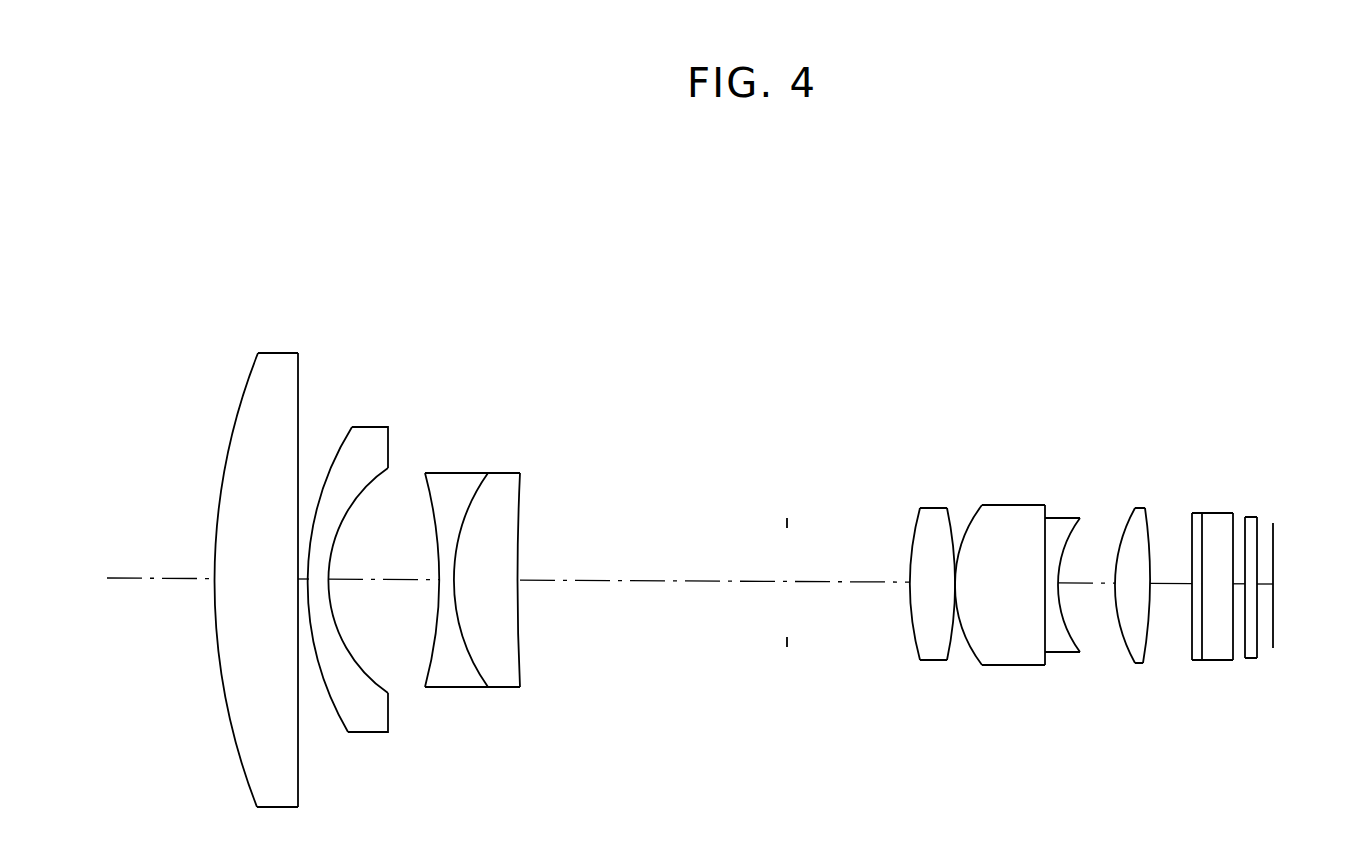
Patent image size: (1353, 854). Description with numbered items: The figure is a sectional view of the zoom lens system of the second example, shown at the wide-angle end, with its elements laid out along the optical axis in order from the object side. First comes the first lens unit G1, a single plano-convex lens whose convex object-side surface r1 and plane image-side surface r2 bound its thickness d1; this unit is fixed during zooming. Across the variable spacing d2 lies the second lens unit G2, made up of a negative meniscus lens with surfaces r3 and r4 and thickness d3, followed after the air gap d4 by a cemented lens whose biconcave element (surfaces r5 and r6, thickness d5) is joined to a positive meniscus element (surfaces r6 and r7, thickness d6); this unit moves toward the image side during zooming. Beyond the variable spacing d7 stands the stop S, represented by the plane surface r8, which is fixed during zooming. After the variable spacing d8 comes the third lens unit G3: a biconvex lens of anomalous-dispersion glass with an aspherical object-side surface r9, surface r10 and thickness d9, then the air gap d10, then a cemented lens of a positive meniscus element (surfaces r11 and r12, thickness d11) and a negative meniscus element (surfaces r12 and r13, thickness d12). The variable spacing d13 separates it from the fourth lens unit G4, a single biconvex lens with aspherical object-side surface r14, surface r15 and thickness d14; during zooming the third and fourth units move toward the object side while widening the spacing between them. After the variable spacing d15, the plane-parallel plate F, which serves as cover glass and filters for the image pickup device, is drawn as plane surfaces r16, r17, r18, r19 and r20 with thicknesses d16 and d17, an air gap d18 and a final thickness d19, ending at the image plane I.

The first lens unit G1 is at (310, 275).
The second lens unit G2 is at (540, 275).
The stop S is at (815, 275).
The third lens unit G3 is at (1090, 275).
The fourth lens unit G4 is at (1165, 275).
The plane-parallel plate F is at (1272, 275).
The image plane I is at (1277, 543).
The radius of curvature of lens surface r1 is at (244, 386).
The radius of curvature of lens surface r2 is at (299, 387).
The radius of curvature of lens surface r3 is at (338, 455).
The radius of curvature of lens surface r4 is at (374, 481).
The radius of curvature of lens surface r5 is at (432, 505).
The radius of curvature of lens surface r6 is at (470, 497).
The radius of curvature of lens surface r7 is at (522, 517).
The radius of curvature of lens surface r8 is at (785, 548).
The radius of curvature of lens surface r9 is at (915, 523).
The radius of curvature of lens surface r10 is at (955, 518).
The radius of curvature of lens surface r11 is at (975, 517).
The radius of curvature of lens surface r12 is at (1043, 535).
The radius of curvature of lens surface r13 is at (1069, 533).
The radius of curvature of lens surface r14 is at (1128, 528).
The radius of curvature of lens surface r15 is at (1153, 523).
The radius of curvature of lens surface r16 is at (1191, 542).
The radius of curvature of lens surface r17 is at (1195, 515).
The radius of curvature of lens surface r18 is at (1229, 532).
The radius of curvature of lens surface r19 is at (1245, 513).
The radius of curvature of lens surface r20 is at (1262, 527).
The spacing between adjacent lens surfaces d1 is at (256, 599).
The spacing between adjacent lens surfaces d2 is at (306, 582).
The spacing between adjacent lens surfaces d3 is at (320, 582).
The spacing between adjacent lens surfaces d4 is at (383, 599).
The spacing between adjacent lens surfaces d5 is at (445, 583).
The spacing between adjacent lens surfaces d6 is at (486, 600).
The spacing between adjacent lens surfaces d7 is at (653, 601).
The spacing between adjacent lens surfaces d8 is at (848, 602).
The spacing between adjacent lens surfaces d9 is at (930, 583).
The spacing between adjacent lens surfaces d10 is at (956, 588).
The spacing between adjacent lens surfaces d11 is at (1000, 603).
The spacing between adjacent lens surfaces d12 is at (1060, 590).
The spacing between adjacent lens surfaces d13 is at (1088, 603).
The spacing between adjacent lens surfaces d14 is at (1135, 587).
The spacing between adjacent lens surfaces d15 is at (1172, 587).
The spacing between adjacent lens surfaces d16 is at (1197, 587).
The spacing between adjacent lens surfaces d17 is at (1220, 587).
The spacing between adjacent lens surfaces d18 is at (1240, 587).
The spacing between adjacent lens surfaces d19 is at (1250, 587).